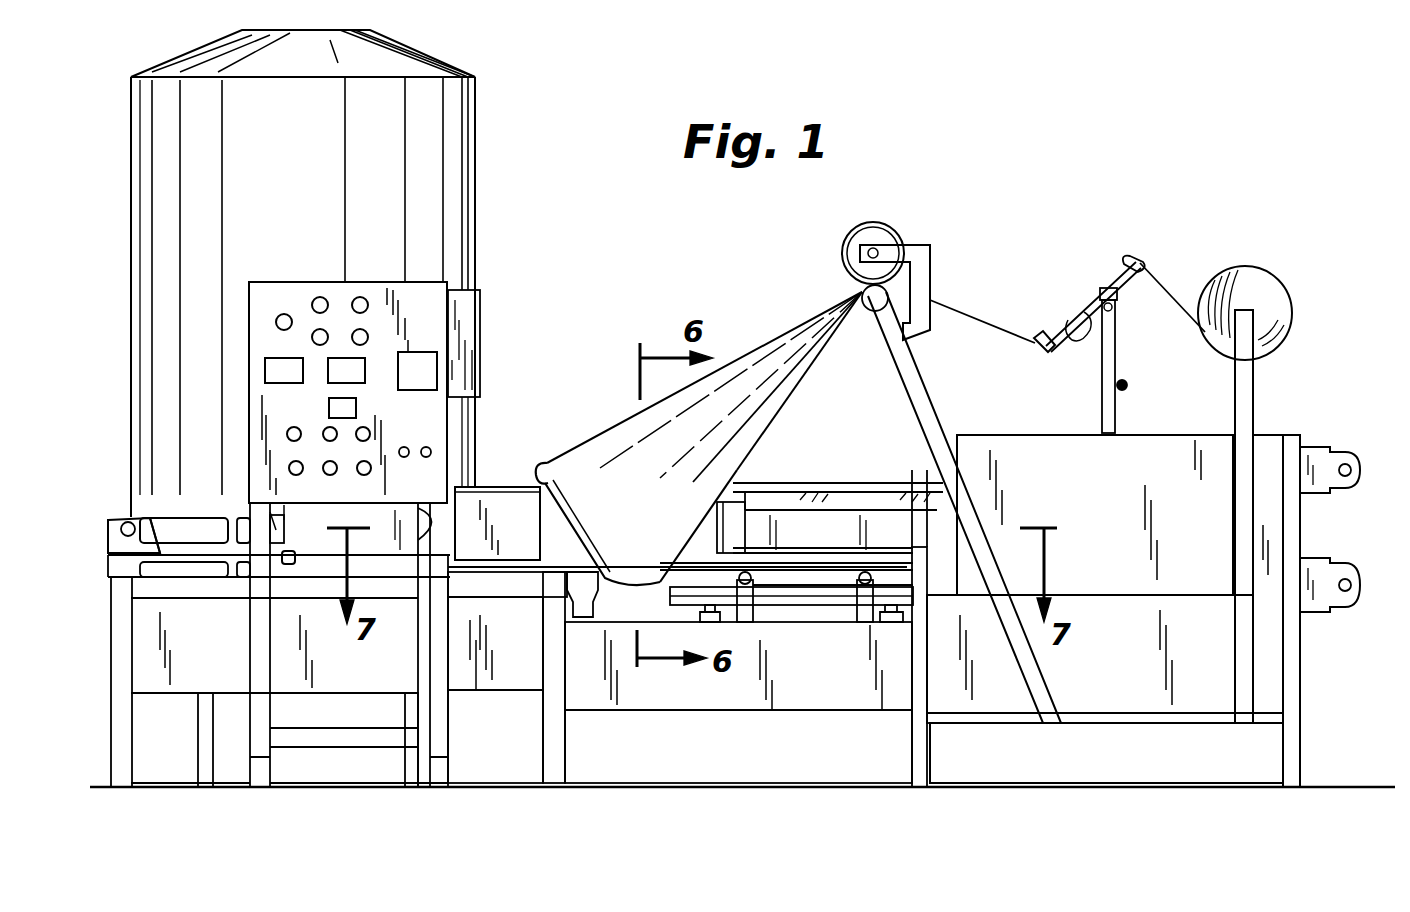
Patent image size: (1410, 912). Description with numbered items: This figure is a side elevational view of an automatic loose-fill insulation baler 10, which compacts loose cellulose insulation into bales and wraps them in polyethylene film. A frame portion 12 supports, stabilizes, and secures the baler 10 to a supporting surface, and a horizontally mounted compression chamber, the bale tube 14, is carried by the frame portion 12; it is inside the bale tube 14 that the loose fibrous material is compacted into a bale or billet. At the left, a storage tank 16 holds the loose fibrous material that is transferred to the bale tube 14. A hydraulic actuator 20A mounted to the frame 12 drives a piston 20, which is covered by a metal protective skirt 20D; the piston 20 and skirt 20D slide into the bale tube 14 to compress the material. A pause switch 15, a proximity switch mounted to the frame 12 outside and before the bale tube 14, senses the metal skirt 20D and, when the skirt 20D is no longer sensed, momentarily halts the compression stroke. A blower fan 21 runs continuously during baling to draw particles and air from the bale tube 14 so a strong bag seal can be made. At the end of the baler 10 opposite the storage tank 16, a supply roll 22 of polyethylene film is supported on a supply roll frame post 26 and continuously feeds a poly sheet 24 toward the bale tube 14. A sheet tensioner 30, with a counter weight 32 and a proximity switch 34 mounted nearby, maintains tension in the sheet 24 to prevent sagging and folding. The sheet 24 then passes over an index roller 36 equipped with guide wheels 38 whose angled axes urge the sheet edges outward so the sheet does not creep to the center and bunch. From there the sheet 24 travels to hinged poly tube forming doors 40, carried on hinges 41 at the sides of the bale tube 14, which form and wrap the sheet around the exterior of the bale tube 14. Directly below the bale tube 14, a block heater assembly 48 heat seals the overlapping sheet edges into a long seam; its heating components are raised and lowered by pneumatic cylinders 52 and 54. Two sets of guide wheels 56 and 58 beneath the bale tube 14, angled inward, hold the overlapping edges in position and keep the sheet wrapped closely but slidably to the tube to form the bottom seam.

The automatic loose-fill insulation baler 10 is at (813, 792).
The frame portion 12 is at (557, 763).
The bale tube 14 is at (488, 495).
The pause switch 15 is at (288, 565).
The storage tank 16 is at (477, 135).
The piston 20 is at (436, 510).
The hydraulic actuator 20A is at (195, 520).
The protective skirt 20D is at (393, 545).
The blower fan 21 is at (570, 600).
The supply roll 22 is at (1258, 278).
The poly sheet 24 is at (1166, 283).
The supply roll frame post 26 is at (1258, 402).
The sheet tensioner 30 is at (1136, 262).
The counter weight 32 is at (1064, 326).
The proximity switch 34 is at (1128, 386).
The index roller 36 is at (860, 320).
The guide wheels 38 is at (882, 228).
The poly tube forming doors 40 is at (545, 462).
The hinges 41 is at (735, 527).
The block heater assembly 48 is at (820, 590).
The pneumatic cylinder 52 is at (705, 622).
The pneumatic cylinder 54 is at (890, 622).
The guide wheel set 56 is at (737, 576).
The guide wheel set 58 is at (870, 574).